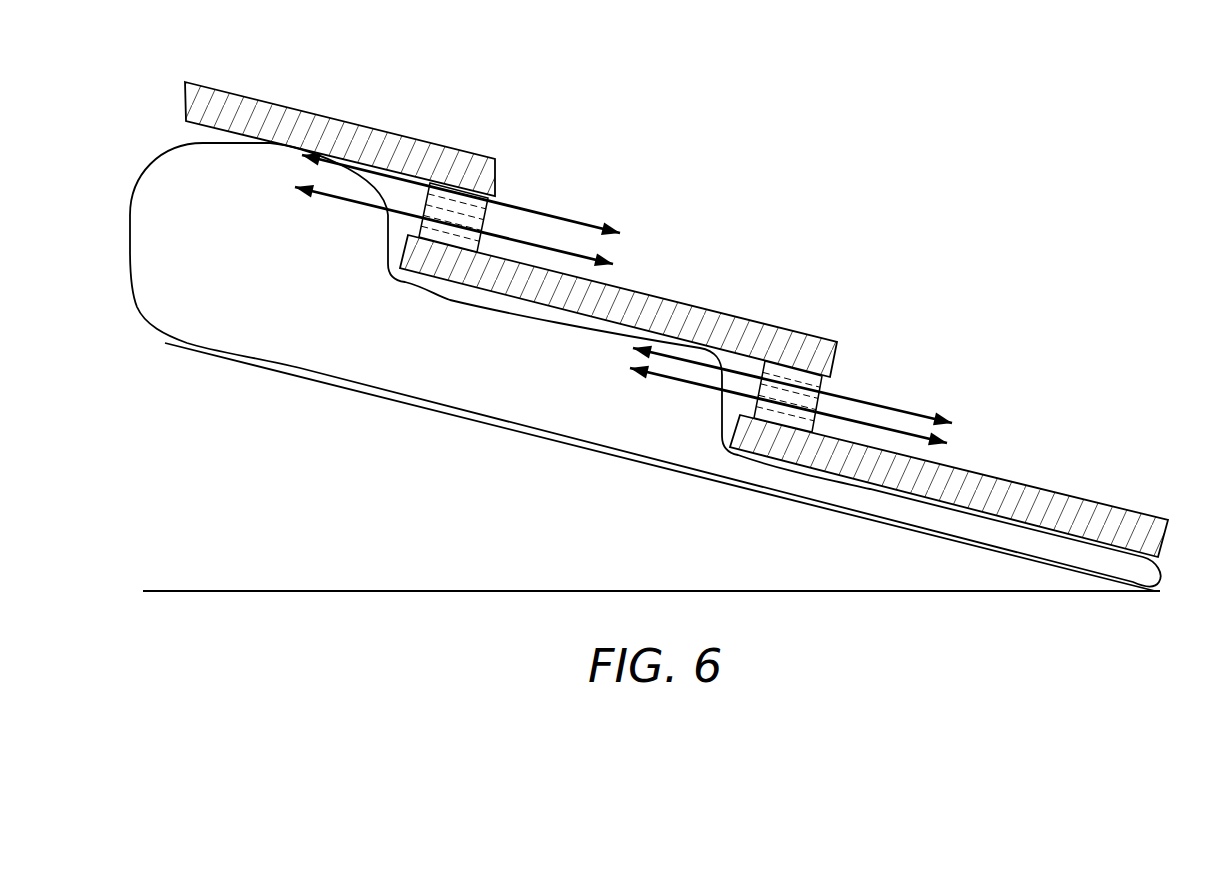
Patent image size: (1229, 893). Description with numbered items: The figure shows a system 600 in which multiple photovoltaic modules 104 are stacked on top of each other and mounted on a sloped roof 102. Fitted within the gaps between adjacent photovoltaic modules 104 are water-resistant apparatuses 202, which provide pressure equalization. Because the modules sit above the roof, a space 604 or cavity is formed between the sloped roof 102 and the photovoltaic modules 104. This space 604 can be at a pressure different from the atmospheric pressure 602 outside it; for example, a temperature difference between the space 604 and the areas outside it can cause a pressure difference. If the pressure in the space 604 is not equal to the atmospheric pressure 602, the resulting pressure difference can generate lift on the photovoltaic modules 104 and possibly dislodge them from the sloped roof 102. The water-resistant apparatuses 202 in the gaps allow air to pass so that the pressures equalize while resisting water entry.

The sloped roof 102 is at (329, 547).
The photovoltaic module 104 is at (232, 93).
The water-resistant apparatus 202 is at (483, 212).
The system 600 is at (1098, 139).
The atmospheric pressure 602 is at (888, 159).
The space 604 is at (350, 326).